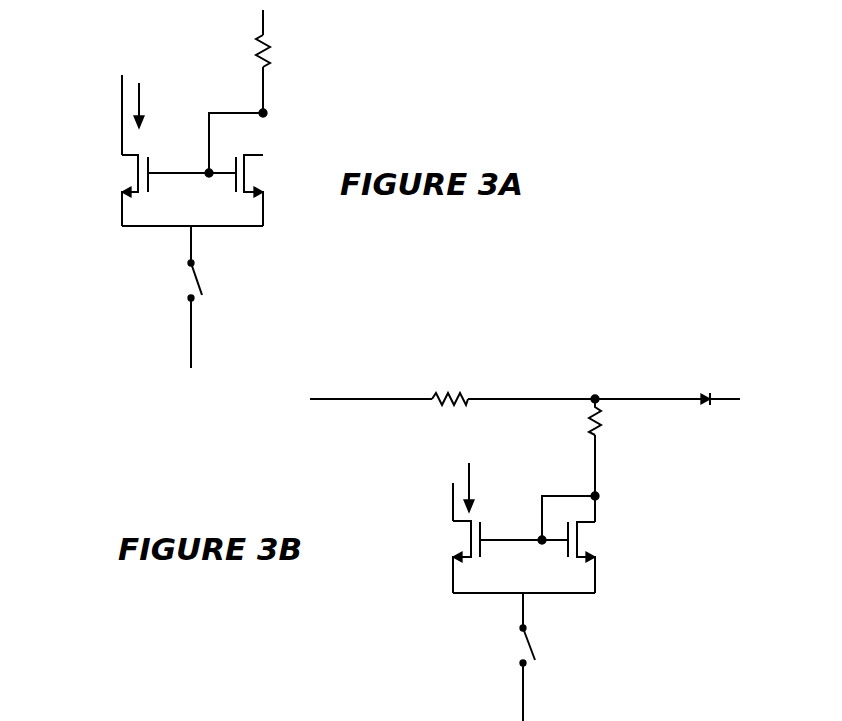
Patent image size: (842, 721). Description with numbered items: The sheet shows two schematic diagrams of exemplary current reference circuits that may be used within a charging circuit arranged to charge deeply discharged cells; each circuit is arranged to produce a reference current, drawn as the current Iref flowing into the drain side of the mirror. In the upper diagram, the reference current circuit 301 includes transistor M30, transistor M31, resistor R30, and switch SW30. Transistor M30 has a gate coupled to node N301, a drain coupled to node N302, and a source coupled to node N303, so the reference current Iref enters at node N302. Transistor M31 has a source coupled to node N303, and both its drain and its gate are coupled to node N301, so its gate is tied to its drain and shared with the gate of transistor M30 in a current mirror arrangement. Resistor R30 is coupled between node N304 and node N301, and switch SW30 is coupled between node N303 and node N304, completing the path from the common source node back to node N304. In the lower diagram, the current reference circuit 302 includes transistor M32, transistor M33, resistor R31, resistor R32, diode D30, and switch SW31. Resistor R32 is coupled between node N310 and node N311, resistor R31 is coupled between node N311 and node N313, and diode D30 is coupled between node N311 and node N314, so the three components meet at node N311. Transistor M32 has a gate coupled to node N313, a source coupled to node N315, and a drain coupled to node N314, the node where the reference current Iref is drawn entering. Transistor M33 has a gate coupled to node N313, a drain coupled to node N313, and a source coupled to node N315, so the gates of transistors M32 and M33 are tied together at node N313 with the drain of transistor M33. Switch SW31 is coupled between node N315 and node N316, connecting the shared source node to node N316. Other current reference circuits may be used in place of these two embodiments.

In FIG. 3A, the reference current circuit 301 is at (180, 53).
In FIG. 3B, the current reference circuit 302 is at (511, 310).
In FIG. 3A, the node N301 is at (280, 120).
In FIG. 3A, the node N302 is at (79, 115).
In FIG. 3A, the node N303 is at (149, 198).
In FIG. 3A, the node N304 is at (271, 187).
In FIG. 3B, the node N310 is at (334, 385).
In FIG. 3B, the node N311 is at (604, 388).
In FIG. 3B, the node N313 is at (586, 489).
In FIG. 3B, the node N314 is at (734, 388).
In FIG. 3B, the node N315 is at (565, 594).
In FIG. 3B, the node N316 is at (561, 692).
In FIG. 3A, the reference current Iref is at (155, 105).
In FIG. 3B, the reference current Iref is at (485, 487).
In FIG. 3A, the transistor M30 is at (124, 185).
In FIG. 3A, the transistor M31 is at (260, 185).
In FIG. 3B, the transistor M32 is at (455, 553).
In FIG. 3B, the transistor M33 is at (593, 552).
In FIG. 3A, the resistor R30 is at (254, 51).
In FIG. 3B, the resistor R31 is at (585, 417).
In FIG. 3B, the resistor R32 is at (450, 406).
In FIG. 3B, the diode D30 is at (705, 417).
In FIG. 3A, the switch SW30 is at (180, 263).
In FIG. 3B, the switch SW31 is at (512, 629).